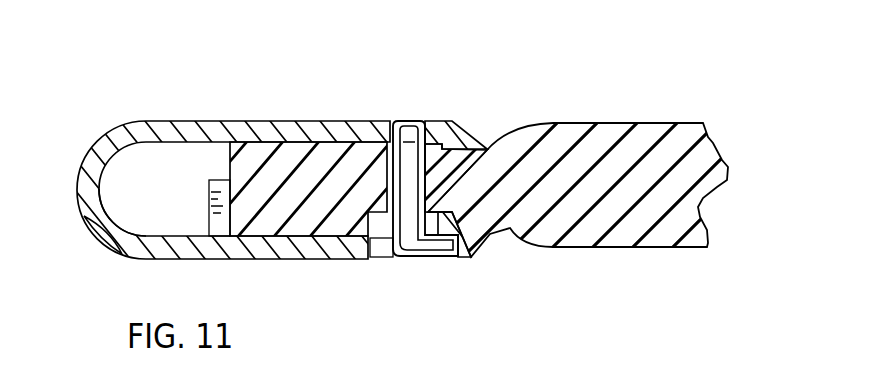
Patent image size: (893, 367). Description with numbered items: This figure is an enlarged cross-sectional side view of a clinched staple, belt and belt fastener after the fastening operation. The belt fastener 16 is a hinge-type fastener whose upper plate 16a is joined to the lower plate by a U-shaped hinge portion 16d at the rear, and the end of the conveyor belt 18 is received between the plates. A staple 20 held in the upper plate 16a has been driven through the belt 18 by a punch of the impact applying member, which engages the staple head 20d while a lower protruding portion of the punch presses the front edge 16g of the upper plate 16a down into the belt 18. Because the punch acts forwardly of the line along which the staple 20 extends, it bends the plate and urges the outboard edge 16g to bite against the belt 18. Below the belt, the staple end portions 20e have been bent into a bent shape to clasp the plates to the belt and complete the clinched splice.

The belt fastener 16 is at (289, 117).
The upper plate 16a is at (374, 120).
The U-shaped hinge portion 16d is at (80, 211).
The front edge of the upper plate 16g is at (478, 138).
The conveyor belt 18 is at (664, 122).
The staple 20 is at (385, 179).
The staple head 20d is at (413, 120).
The staple end portion 20e is at (433, 246).